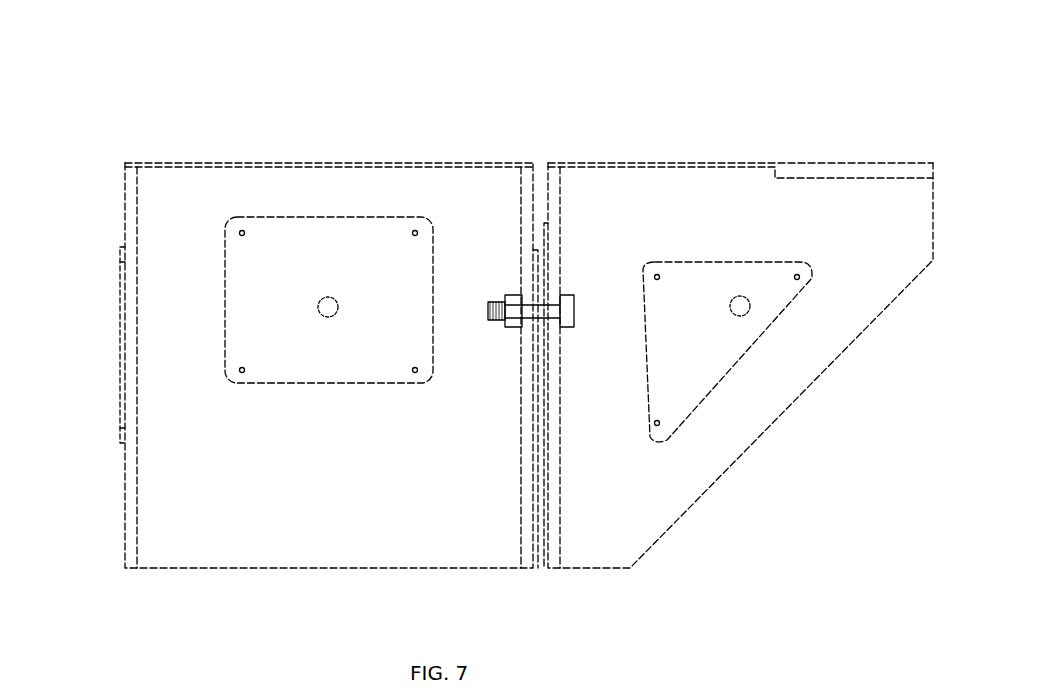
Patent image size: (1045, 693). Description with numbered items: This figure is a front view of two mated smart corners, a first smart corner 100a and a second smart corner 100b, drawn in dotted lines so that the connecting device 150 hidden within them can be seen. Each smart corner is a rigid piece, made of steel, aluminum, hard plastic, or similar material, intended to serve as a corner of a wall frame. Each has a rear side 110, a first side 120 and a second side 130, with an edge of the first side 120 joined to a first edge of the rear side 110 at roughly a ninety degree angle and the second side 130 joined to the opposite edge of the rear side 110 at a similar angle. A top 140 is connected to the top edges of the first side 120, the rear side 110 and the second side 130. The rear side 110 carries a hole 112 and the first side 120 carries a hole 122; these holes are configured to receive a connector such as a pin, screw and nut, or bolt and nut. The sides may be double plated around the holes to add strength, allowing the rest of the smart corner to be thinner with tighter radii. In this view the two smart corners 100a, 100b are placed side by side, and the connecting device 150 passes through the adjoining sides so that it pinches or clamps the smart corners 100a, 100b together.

The first smart corner 100a is at (184, 108).
The second smart corner 100b is at (700, 108).
The rear side 110 is at (175, 215).
The hole 112 is at (328, 305).
The first side 120 is at (528, 517).
The hole 122 is at (525, 284).
The second side 130 is at (115, 348).
The top 140 is at (412, 152).
The connecting device 150 is at (572, 318).